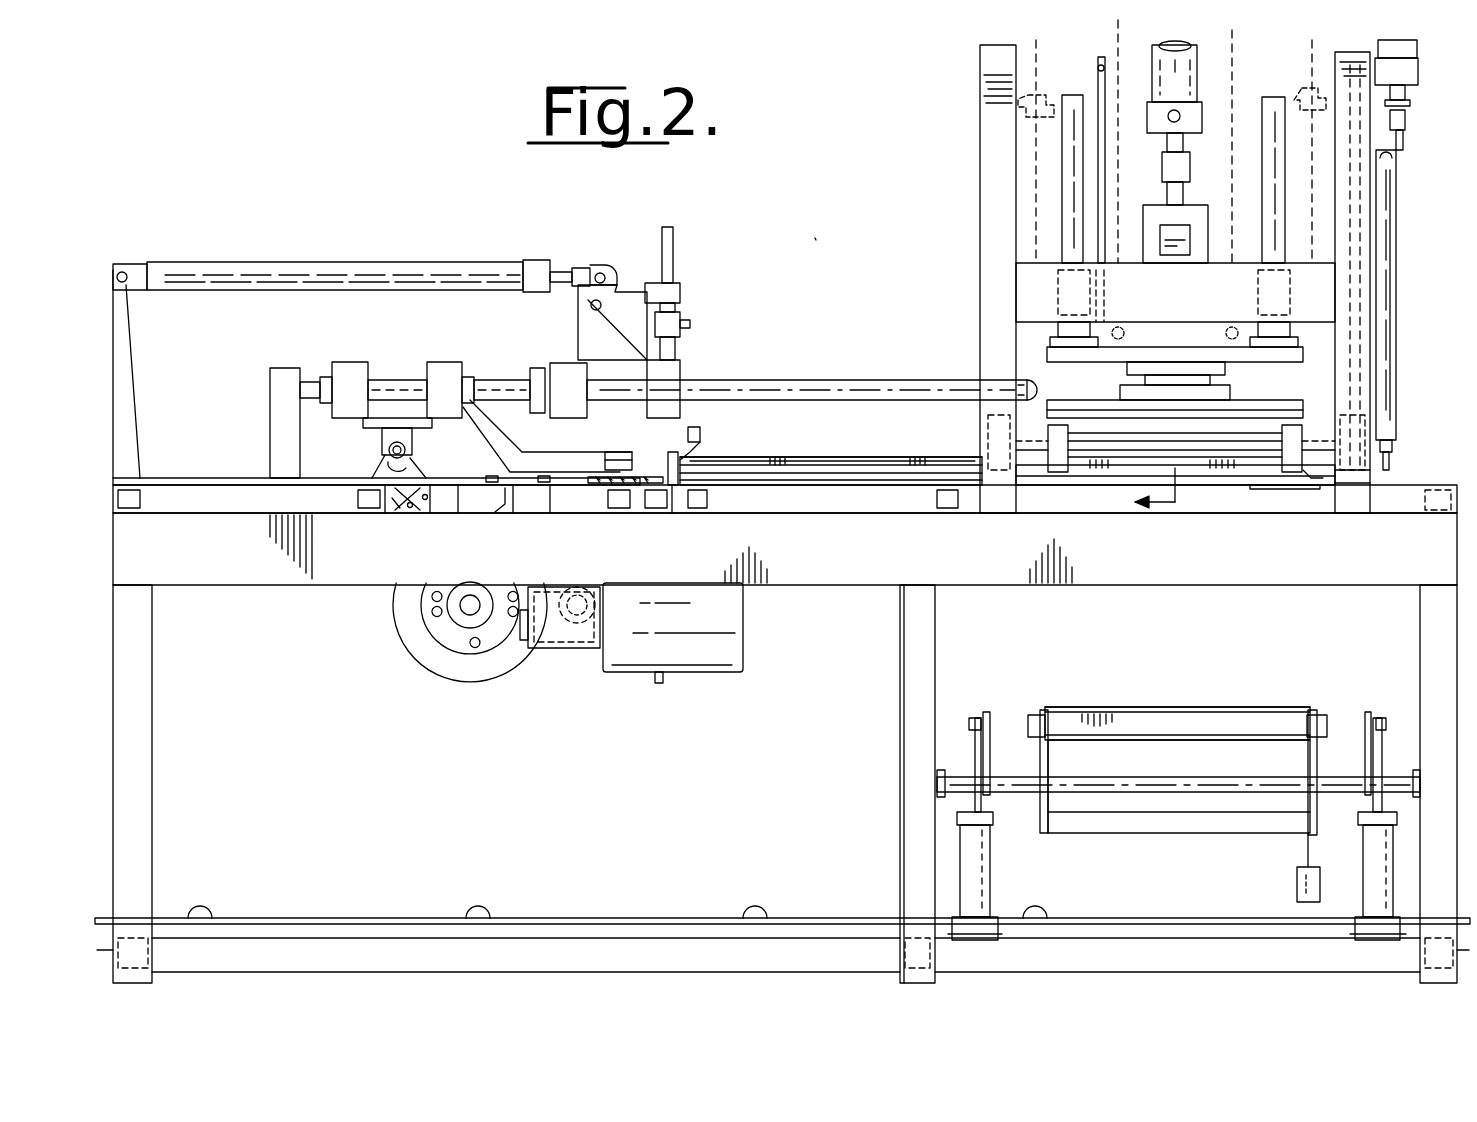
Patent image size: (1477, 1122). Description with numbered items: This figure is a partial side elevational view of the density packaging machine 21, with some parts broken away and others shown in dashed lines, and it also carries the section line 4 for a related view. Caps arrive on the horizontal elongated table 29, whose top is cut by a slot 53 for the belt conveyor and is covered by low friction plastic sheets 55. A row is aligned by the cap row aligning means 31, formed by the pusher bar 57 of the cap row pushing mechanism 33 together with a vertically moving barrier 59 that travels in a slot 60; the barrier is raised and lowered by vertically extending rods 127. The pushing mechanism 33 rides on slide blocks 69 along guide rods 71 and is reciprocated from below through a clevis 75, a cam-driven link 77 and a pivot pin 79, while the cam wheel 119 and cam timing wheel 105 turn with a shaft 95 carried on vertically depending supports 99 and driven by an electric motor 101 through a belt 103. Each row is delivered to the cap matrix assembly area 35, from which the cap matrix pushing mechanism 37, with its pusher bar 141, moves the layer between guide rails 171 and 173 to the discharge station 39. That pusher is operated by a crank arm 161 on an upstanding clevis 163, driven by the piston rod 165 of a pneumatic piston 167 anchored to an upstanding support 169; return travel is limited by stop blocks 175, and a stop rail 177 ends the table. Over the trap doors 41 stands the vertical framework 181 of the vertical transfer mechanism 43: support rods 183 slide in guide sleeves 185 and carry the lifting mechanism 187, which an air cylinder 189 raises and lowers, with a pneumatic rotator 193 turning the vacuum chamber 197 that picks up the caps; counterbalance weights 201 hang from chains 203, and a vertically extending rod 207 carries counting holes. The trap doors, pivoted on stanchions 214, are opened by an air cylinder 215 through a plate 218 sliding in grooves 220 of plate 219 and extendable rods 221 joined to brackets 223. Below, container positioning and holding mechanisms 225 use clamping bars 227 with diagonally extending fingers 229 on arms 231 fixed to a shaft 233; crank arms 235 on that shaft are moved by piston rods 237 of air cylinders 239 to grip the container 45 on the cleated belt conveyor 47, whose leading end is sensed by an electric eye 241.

The section line 4- 4 is at (1140, 66).
The density packaging machine 21 is at (812, 242).
The horizontal elongated table 29 is at (208, 468).
The cap row aligning means 31 is at (672, 458).
The cap row pushing mechanism 33 is at (520, 436).
The cap matrix assembly area 35 is at (822, 450).
The cap matrix pushing mechanism 37 is at (690, 348).
The discharge station 39 is at (1255, 505).
The trap doors 41 is at (1090, 485).
The vertical transfer mechanism 43 is at (1255, 365).
The container 45 is at (1202, 705).
The cleated belt conveyor 47 is at (630, 918).
The slot 53 is at (642, 510).
The plastic sheets 55 is at (815, 485).
The pusher bar 57 is at (638, 460).
The vertically moving barrier 59 is at (692, 452).
The slot 60 is at (672, 513).
The slide blocks 69 is at (455, 362).
The guide rods 71 is at (898, 385).
The clevis 75 is at (385, 436).
The cam-driven link 77 is at (405, 510).
The pivot pin 79 is at (392, 455).
The shaft 95 is at (460, 612).
The vertically depending supports 99 is at (466, 505).
The electric motor 101 is at (743, 650).
The belt 103 is at (495, 655).
The cam timing wheel 105 is at (462, 625).
The cam wheel 119 is at (395, 628).
The vertically extending rods 127 is at (660, 685).
The pusher bar 141 is at (700, 440).
The crank arm 161 is at (610, 275).
The upstanding clevis 163 is at (585, 315).
The piston rod 165 is at (565, 272).
The pneumatic piston 167 is at (245, 268).
The upstanding support 169 is at (133, 392).
The guide rails 171 is at (885, 457).
The guide rails 173 is at (1130, 485).
The stop blocks 175 is at (542, 370).
The stop rail 177 is at (1370, 470).
The vertical framework 181 is at (990, 210).
The support rods 183 is at (1098, 212).
The guide sleeves 185 is at (1090, 293).
The lifting mechanism 187 is at (1212, 205).
The air cylinder 189 is at (1200, 45).
The pneumatic rotator 193 is at (1147, 212).
The vacuum chamber 197 is at (1092, 410).
The counterbalance weights 201 is at (1030, 125).
The chains 203 is at (1090, 50).
The vertically extending rod 207 is at (1082, 165).
The stanchions 214 is at (988, 425).
The air cylinder 215 is at (1410, 50).
The plate 218 is at (1395, 140).
The plate 219 is at (1345, 235).
The grooves 220 is at (1396, 268).
The extendable rods 221 is at (1396, 330).
The bracket 223 is at (1312, 500).
The container positioning and holding mechanisms 225 is at (1130, 690).
The clamping bar 227 is at (1200, 778).
The diagonally extending fingers 229 is at (1035, 714).
The arms 231 is at (1048, 765).
The shaft 233 is at (1215, 795).
The crank arms 235 is at (995, 710).
The piston rods 237 is at (975, 730).
The air cylinders 239 is at (990, 880).
The electric eye 241 is at (1297, 885).